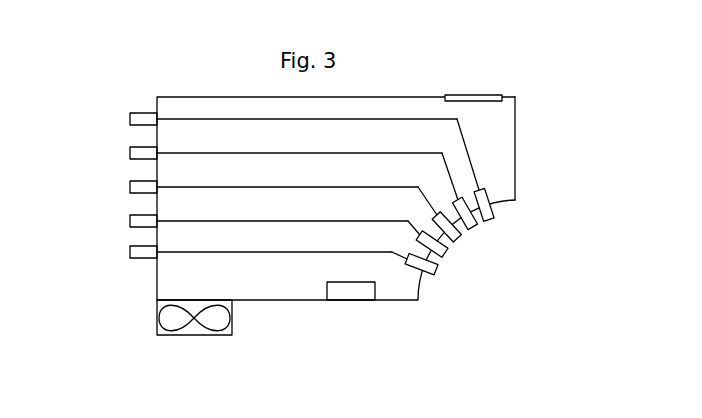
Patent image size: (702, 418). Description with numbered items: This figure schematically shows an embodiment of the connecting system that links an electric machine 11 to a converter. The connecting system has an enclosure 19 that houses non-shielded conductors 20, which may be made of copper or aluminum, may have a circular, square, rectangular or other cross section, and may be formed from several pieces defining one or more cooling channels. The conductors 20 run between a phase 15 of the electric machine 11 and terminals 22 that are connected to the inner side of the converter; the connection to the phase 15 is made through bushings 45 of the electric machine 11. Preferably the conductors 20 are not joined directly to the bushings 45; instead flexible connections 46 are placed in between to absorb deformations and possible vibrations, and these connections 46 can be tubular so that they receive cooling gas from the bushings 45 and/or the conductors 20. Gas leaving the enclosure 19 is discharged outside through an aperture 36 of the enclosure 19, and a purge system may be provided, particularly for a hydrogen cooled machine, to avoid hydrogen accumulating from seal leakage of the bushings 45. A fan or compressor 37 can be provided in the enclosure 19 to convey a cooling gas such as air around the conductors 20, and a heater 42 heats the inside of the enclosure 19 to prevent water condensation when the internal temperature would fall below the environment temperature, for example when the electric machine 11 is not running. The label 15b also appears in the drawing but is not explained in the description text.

The electric machine 11 is at (481, 298).
The phase 15 is at (567, 0).
The housing part 15b is at (660, 5).
The enclosure 19 is at (515, 182).
The conductors 20 is at (295, 187).
The terminals 22 is at (140, 218).
The aperture 36 is at (475, 98).
The fan or compressor 37 is at (165, 320).
The heater 42 is at (355, 292).
The bushings 45 is at (440, 248).
The flexible connections 46 is at (463, 135).